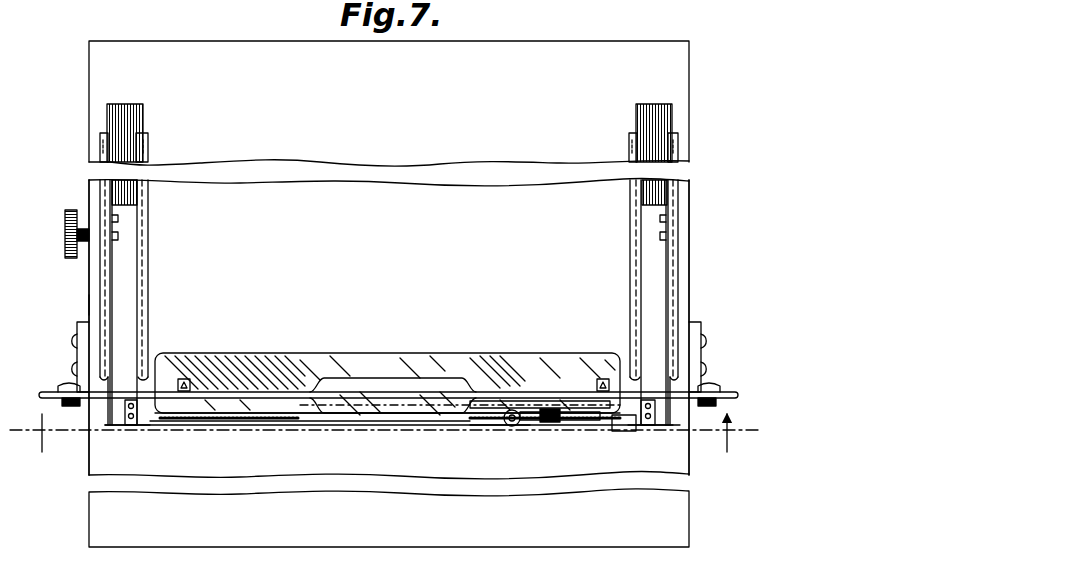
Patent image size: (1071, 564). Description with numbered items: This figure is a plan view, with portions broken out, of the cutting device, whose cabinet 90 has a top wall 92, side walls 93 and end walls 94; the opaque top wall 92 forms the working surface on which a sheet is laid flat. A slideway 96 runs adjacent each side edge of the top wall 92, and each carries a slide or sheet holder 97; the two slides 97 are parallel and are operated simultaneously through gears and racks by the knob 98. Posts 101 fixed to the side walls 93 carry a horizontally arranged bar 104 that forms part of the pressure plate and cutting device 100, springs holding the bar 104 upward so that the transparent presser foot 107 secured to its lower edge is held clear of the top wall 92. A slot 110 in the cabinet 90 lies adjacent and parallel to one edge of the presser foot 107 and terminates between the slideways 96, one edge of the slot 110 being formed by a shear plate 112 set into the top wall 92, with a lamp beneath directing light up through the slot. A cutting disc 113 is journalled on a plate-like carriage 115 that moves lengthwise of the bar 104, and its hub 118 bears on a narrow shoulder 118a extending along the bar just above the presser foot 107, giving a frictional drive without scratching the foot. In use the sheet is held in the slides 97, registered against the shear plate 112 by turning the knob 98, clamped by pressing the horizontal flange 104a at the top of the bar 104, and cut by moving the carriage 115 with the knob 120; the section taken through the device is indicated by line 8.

The section line 8- 8 is at (386, 433).
The cabinet 90 is at (86, 306).
The top wall 92 is at (389, 329).
The side walls 93 is at (89, 280).
The end walls 94 is at (115, 547).
The slideway 96 is at (104, 148).
The slide or sheet holder 97 is at (125, 255).
The knob 98 is at (65, 220).
The pressure plate and cutting device 100 is at (362, 350).
The posts 101 is at (83, 378).
The bar 104 is at (250, 398).
The horizontal flange 104a is at (448, 365).
The transparent presser foot 107 is at (263, 358).
The slot 110 is at (455, 444).
The shear plate 112 is at (153, 420).
The cutting disc 113 is at (565, 428).
The carriage 115 is at (548, 365).
The hub 118 is at (615, 425).
The shoulder 118a is at (480, 410).
The knob 120 is at (527, 430).